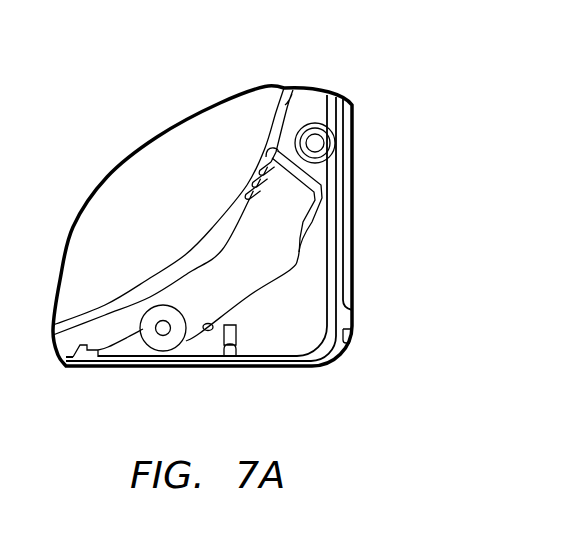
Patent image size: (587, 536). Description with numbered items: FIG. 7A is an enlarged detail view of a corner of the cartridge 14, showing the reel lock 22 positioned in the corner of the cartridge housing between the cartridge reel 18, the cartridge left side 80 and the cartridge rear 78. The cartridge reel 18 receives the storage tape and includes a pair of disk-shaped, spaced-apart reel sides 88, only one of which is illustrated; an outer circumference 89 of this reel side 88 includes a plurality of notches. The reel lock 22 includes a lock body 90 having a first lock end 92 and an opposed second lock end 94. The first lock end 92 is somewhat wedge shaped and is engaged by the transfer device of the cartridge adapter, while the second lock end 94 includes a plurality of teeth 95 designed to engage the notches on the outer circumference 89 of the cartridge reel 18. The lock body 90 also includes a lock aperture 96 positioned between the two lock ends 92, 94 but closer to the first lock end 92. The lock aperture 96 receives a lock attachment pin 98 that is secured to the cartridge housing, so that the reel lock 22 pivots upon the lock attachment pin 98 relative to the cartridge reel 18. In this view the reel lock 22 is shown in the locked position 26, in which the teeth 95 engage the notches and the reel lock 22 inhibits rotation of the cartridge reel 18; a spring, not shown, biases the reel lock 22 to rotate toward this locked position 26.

The cartridge 14 is at (362, 139).
The cartridge reel 18 is at (215, 120).
The reel lock 22 is at (248, 255).
The locked position 26 is at (278, 301).
The cartridge rear 78 is at (355, 248).
The cartridge left side 80 is at (73, 368).
The reel sides 88 is at (176, 169).
The outer circumference 89 is at (288, 96).
The lock body 90 is at (213, 305).
The first lock end 92 is at (276, 187).
The second lock end 94 is at (117, 349).
The teeth 95 is at (283, 136).
The lock aperture 96 is at (167, 334).
The lock attachment pin 98 is at (158, 334).